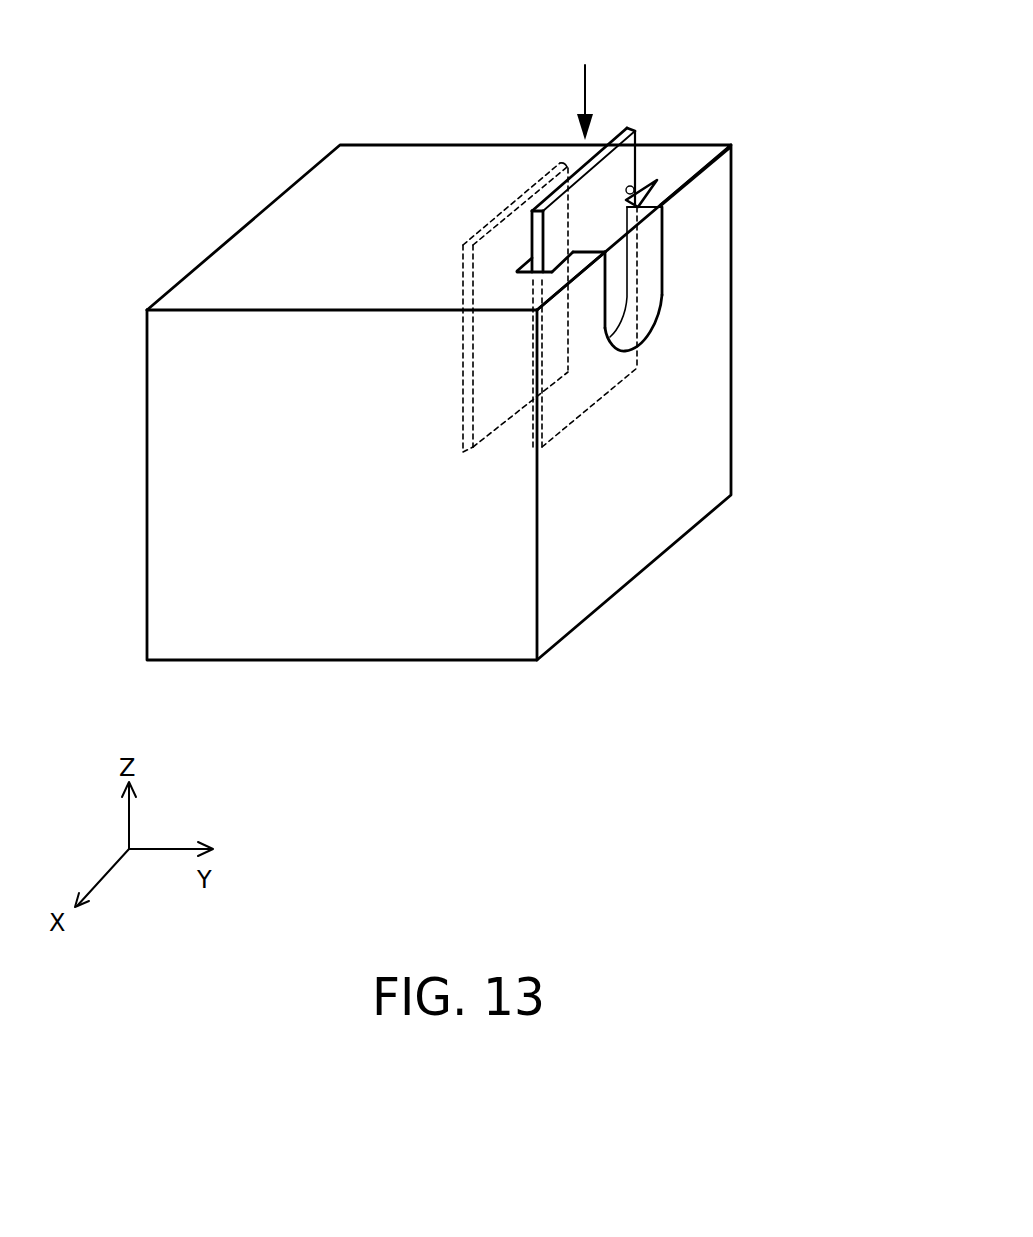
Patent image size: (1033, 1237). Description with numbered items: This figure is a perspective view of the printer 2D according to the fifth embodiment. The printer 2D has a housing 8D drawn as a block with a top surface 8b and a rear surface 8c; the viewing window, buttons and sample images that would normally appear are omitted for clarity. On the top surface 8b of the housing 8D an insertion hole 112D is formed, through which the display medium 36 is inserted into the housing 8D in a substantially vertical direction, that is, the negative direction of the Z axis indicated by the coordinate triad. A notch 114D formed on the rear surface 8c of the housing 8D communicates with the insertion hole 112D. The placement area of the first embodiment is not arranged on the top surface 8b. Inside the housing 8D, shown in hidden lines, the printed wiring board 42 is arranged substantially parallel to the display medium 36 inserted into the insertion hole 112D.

The printer 2D is at (766, 122).
The housing 8D is at (732, 328).
The top surface 8b is at (377, 163).
The rear surface 8c is at (718, 452).
The display medium 36 is at (626, 158).
The printed wiring board 42 is at (522, 190).
The insertion hole 112D is at (658, 183).
The notch 114D is at (651, 268).